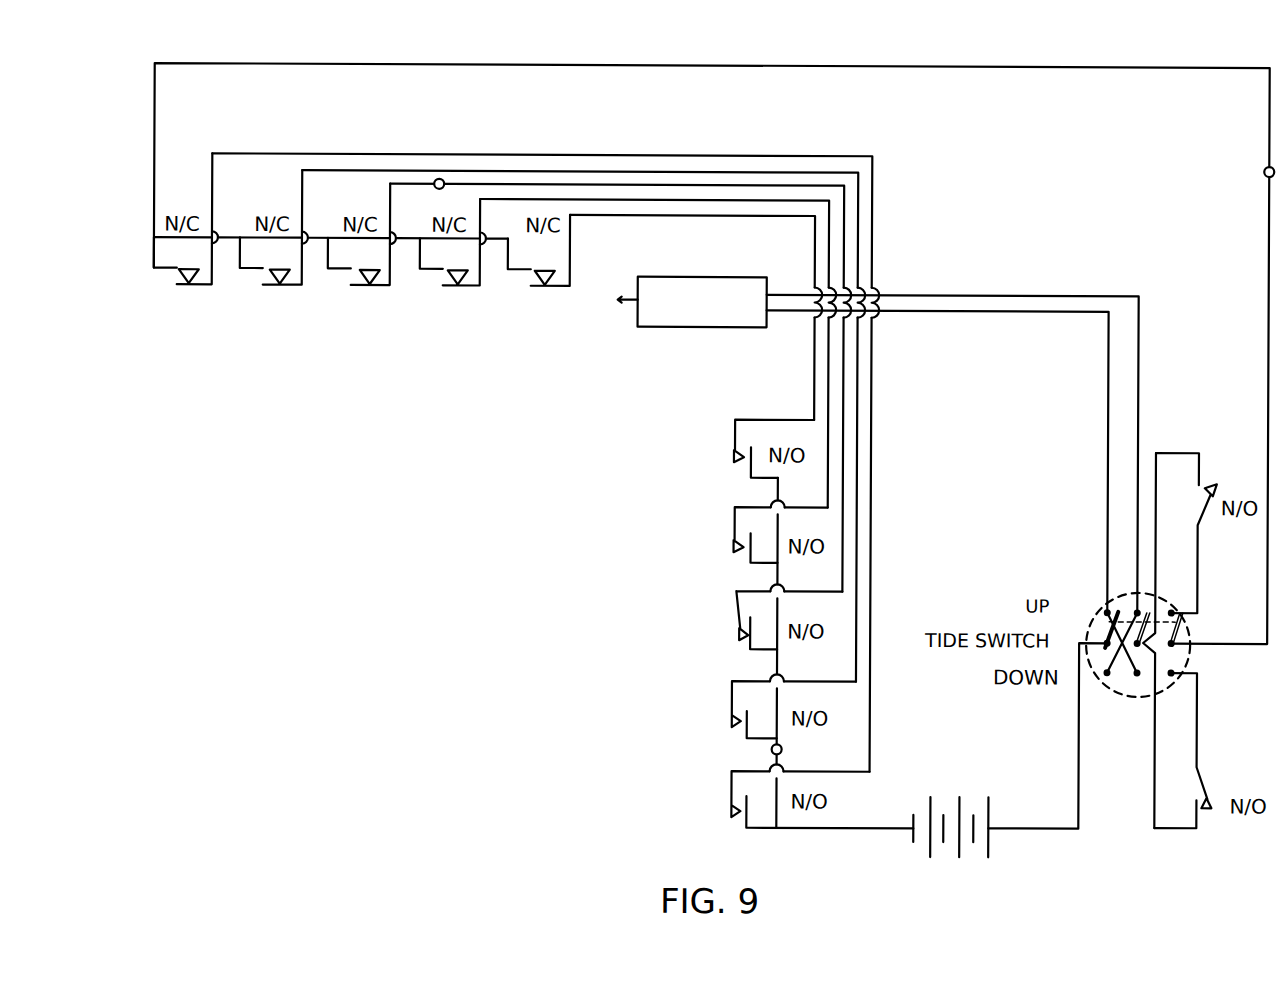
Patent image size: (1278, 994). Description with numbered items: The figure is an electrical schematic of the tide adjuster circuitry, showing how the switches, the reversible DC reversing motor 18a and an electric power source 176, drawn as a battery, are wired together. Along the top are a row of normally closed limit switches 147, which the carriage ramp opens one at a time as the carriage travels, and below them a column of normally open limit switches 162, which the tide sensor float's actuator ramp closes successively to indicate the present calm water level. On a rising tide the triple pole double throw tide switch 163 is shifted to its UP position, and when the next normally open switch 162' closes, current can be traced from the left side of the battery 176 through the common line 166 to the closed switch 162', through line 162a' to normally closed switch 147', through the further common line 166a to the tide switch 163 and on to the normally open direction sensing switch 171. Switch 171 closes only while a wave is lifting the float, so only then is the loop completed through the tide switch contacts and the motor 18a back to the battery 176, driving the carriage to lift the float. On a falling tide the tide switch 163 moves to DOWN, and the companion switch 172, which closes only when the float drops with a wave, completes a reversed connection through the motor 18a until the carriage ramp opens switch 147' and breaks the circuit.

The normally closed limit switch 147 is at (230, 239).
The normally closed switch 147' is at (370, 254).
The line 162a' is at (503, 148).
The DC reversing motor 18a is at (735, 328).
The normally open limit switch 162 is at (709, 491).
The normally open switch 162' is at (752, 620).
The common line 166 is at (773, 749).
The common line 166a is at (1263, 170).
The tide switch 163 is at (1107, 610).
The direction sensing switch 171 is at (1218, 486).
The direction sensing switch 172 is at (1208, 780).
The electric power source 176 is at (992, 833).